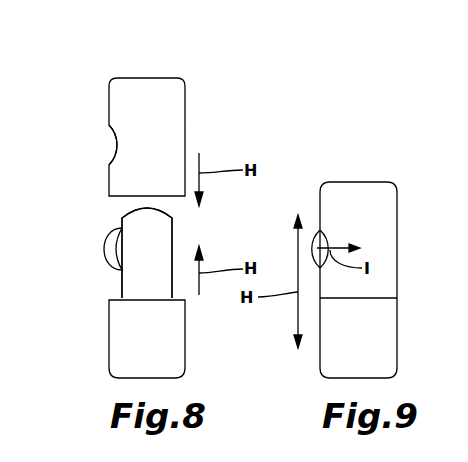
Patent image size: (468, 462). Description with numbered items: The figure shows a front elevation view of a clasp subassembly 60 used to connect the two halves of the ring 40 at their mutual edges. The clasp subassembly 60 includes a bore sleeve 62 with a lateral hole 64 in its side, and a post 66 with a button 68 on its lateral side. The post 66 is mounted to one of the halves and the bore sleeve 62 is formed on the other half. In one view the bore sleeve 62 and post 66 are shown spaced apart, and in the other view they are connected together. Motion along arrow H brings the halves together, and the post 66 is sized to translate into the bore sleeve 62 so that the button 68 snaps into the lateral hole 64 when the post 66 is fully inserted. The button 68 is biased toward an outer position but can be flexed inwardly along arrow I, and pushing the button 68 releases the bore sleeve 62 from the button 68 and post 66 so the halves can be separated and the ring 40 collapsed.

The ring 40 is at (0, 50).
The clasp subassembly 60 is at (100, 203).
The bore sleeve 62 is at (160, 129).
The lateral hole 64 is at (112, 145).
The post 66 is at (161, 252).
The button 68 is at (104, 250).